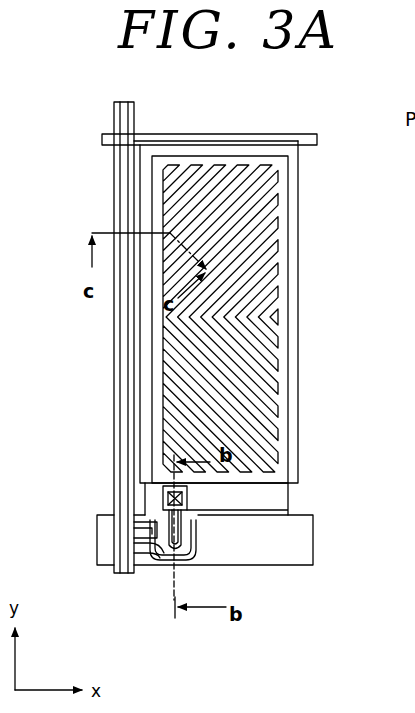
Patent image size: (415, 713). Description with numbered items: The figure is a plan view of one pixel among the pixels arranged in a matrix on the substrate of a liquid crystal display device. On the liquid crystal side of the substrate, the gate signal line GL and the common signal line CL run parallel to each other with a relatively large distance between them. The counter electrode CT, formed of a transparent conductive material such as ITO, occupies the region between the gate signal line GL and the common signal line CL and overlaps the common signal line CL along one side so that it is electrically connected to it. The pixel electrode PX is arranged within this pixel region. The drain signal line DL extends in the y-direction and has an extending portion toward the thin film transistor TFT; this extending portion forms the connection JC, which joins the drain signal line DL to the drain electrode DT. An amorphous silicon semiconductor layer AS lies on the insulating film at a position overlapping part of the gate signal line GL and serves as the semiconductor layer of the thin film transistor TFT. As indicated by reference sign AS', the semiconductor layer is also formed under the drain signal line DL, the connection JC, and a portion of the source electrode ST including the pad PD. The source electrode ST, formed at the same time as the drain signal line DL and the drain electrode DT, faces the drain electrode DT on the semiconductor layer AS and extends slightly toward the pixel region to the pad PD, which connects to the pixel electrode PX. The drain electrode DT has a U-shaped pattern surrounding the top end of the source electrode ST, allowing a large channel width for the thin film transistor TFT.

The drain signal line DL is at (118, 426).
The common signal line CL is at (305, 133).
The counter electrode CT is at (299, 298).
The pixel electrode PX is at (299, 420).
The thin film transistor TFT is at (205, 525).
The gate signal line GL is at (296, 558).
The semiconductor layer AS is at (216, 563).
The semiconductor layer under the drain signal line AS' is at (79, 174).
The source electrode ST is at (133, 535).
The connection JC is at (147, 554).
The pad PD is at (168, 492).
The drain electrode DT is at (175, 585).